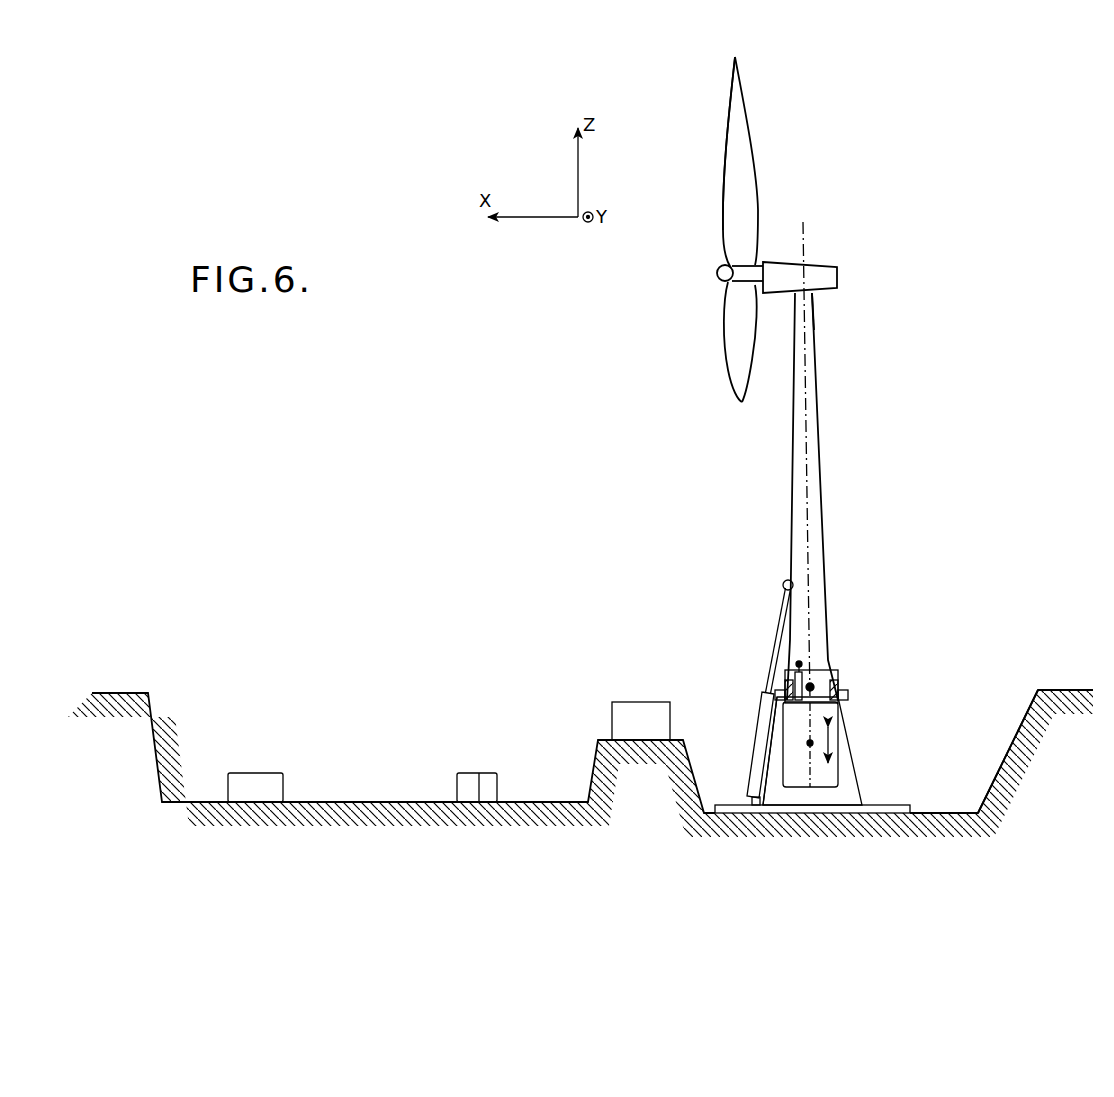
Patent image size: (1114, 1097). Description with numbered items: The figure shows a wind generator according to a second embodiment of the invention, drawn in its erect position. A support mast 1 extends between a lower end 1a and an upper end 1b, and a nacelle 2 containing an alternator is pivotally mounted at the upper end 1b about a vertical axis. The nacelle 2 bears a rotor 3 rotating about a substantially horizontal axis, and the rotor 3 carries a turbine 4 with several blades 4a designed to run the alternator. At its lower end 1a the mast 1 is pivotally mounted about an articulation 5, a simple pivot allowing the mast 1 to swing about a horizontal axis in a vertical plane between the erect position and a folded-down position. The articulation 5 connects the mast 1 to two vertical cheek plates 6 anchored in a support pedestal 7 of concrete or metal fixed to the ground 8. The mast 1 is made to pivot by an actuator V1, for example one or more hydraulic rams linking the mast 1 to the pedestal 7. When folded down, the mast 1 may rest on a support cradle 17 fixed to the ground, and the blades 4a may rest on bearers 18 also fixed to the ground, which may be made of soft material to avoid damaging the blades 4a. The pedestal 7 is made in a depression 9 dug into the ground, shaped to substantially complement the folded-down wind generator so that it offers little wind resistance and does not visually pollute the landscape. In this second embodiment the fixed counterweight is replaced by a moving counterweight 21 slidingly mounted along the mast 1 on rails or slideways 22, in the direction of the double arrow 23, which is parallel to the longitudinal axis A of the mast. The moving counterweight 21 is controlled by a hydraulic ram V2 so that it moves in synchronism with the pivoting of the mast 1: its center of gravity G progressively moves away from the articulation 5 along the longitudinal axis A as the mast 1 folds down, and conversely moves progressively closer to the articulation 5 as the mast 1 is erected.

The support mast 1 is at (825, 468).
The lower end 1a is at (813, 792).
The upper end 1b is at (810, 303).
The nacelle 2 is at (805, 255).
The rotor 3 is at (744, 272).
The turbine 4 is at (770, 136).
The blades 4a is at (735, 332).
The articulation 5 is at (820, 684).
The vertical cheek plates 6 is at (793, 797).
The support pedestal 7 is at (885, 810).
The ground 8 is at (1073, 700).
The depression 9 is at (973, 747).
The support cradle 17 is at (638, 710).
The bearers 18 is at (470, 782).
The moving counterweight 21 is at (802, 768).
The rails or slideways 22 is at (775, 677).
The double arrow 23 is at (833, 745).
The actuator V1 is at (757, 718).
The hydraulic ram V2 is at (807, 673).
The center of gravity G is at (803, 745).
The longitudinal axis A is at (808, 507).